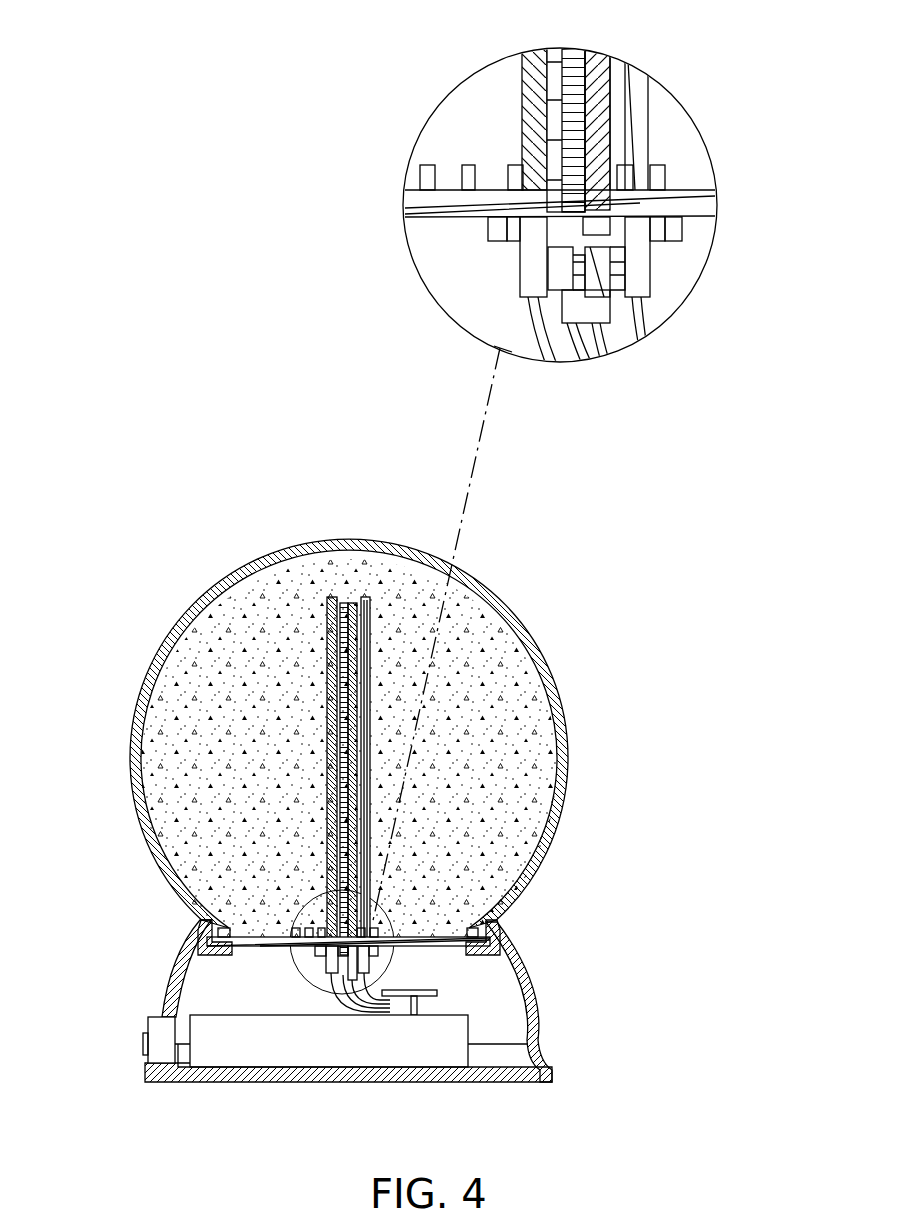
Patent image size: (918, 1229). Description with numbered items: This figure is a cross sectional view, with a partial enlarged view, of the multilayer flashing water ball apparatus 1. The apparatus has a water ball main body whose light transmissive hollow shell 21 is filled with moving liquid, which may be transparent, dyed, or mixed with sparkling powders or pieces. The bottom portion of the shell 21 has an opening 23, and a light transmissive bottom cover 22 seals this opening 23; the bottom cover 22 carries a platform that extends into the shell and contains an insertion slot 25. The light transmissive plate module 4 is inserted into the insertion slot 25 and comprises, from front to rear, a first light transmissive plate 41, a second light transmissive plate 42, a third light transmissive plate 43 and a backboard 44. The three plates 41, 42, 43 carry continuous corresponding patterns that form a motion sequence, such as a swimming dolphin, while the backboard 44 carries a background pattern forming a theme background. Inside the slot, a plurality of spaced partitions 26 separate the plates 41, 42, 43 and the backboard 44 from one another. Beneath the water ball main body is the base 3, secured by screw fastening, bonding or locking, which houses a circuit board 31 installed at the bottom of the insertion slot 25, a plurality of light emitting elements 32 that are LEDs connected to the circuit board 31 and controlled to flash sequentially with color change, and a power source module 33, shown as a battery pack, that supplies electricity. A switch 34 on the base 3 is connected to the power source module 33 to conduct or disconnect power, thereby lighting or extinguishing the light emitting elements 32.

The multilayer flashing water ball apparatus 1 is at (146, 598).
The light transmissive hollow shell 21 is at (132, 767).
The light transmissive bottom cover 22 is at (232, 944).
The opening 23 is at (207, 920).
The insertion slot 25 is at (645, 183).
The partitions 26 is at (620, 183).
The base 3 is at (537, 1007).
The circuit board 31 is at (432, 990).
The light emitting elements 32 is at (600, 298).
The power source module 33 is at (176, 1083).
The switch 34 is at (143, 1043).
The light transmissive plate module 4 is at (501, 135).
The first light transmissive plate 41 is at (540, 192).
The second light transmissive plate 42 is at (522, 60).
The third light transmissive plate 43 is at (556, 103).
The backboard 44 is at (600, 128).